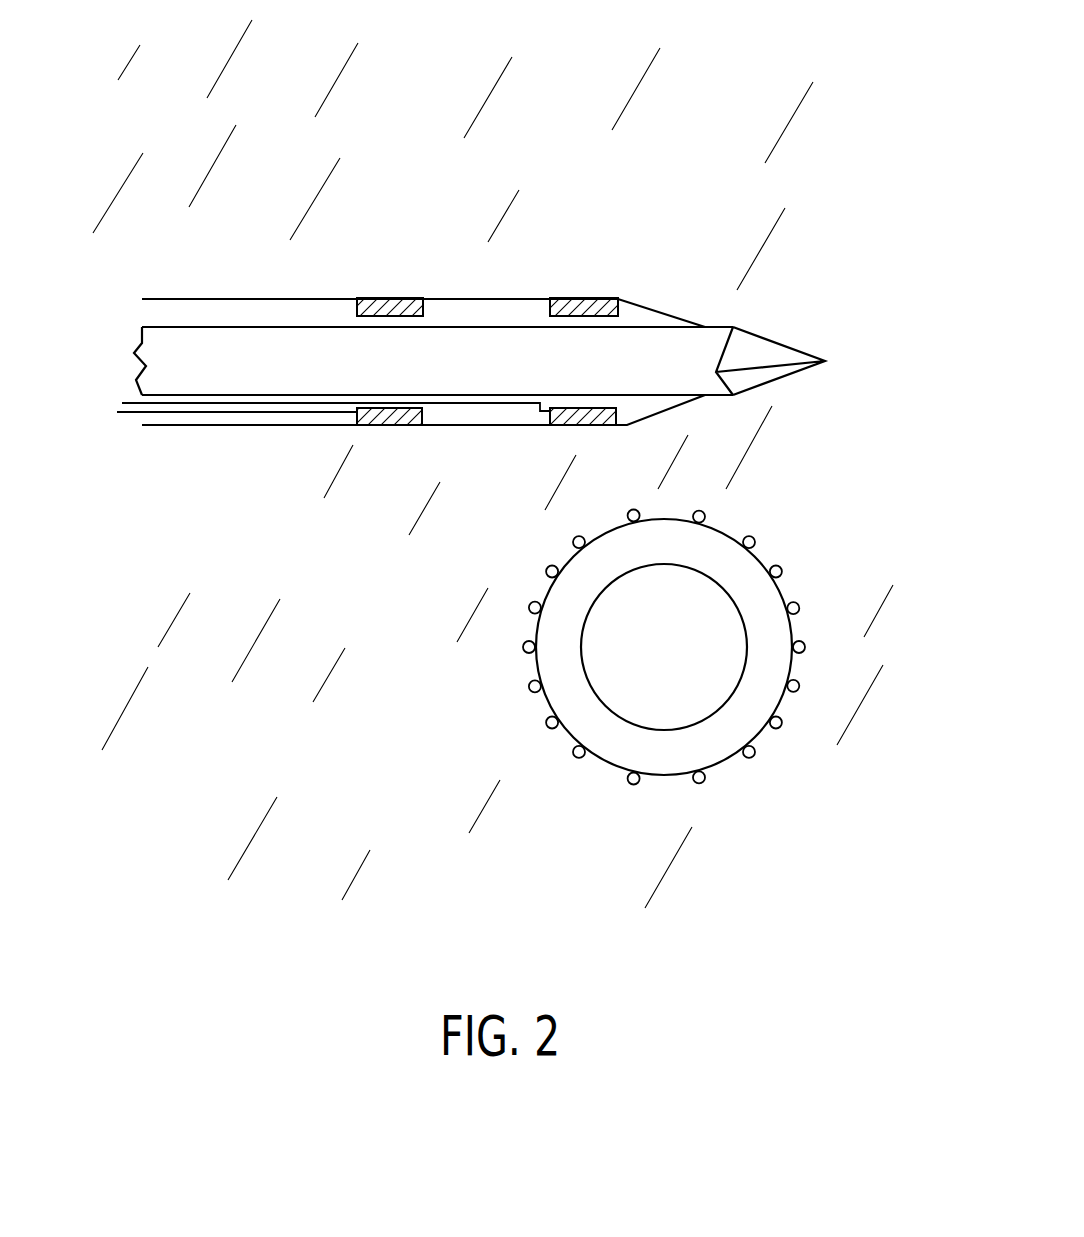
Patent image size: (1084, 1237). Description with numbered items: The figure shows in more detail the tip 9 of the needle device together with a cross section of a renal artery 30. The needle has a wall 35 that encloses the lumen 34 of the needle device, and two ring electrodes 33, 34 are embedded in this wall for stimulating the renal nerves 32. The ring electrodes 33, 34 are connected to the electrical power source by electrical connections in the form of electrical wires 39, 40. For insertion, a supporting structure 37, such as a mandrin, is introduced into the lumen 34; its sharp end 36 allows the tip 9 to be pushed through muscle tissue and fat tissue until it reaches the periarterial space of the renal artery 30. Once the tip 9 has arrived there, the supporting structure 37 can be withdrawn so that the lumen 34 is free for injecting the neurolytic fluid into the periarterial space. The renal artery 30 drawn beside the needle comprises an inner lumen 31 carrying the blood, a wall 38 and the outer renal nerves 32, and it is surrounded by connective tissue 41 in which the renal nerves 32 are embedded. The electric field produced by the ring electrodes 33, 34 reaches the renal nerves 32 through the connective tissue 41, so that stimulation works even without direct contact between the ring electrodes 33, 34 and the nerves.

The tip 9 is at (630, 218).
The renal artery 30 is at (838, 555).
The inner lumen 31 is at (691, 675).
The renal nerves 32 is at (758, 537).
The ring electrode 33 is at (397, 297).
The ring electrode 34 is at (588, 297).
The wall 35 is at (183, 297).
The sharp end 36 is at (828, 355).
The supporting structure 37 is at (482, 365).
The wall 38 is at (565, 700).
The electrical connection 39 is at (130, 413).
The electrical connection 40 is at (196, 403).
The connective tissue 41 is at (343, 634).